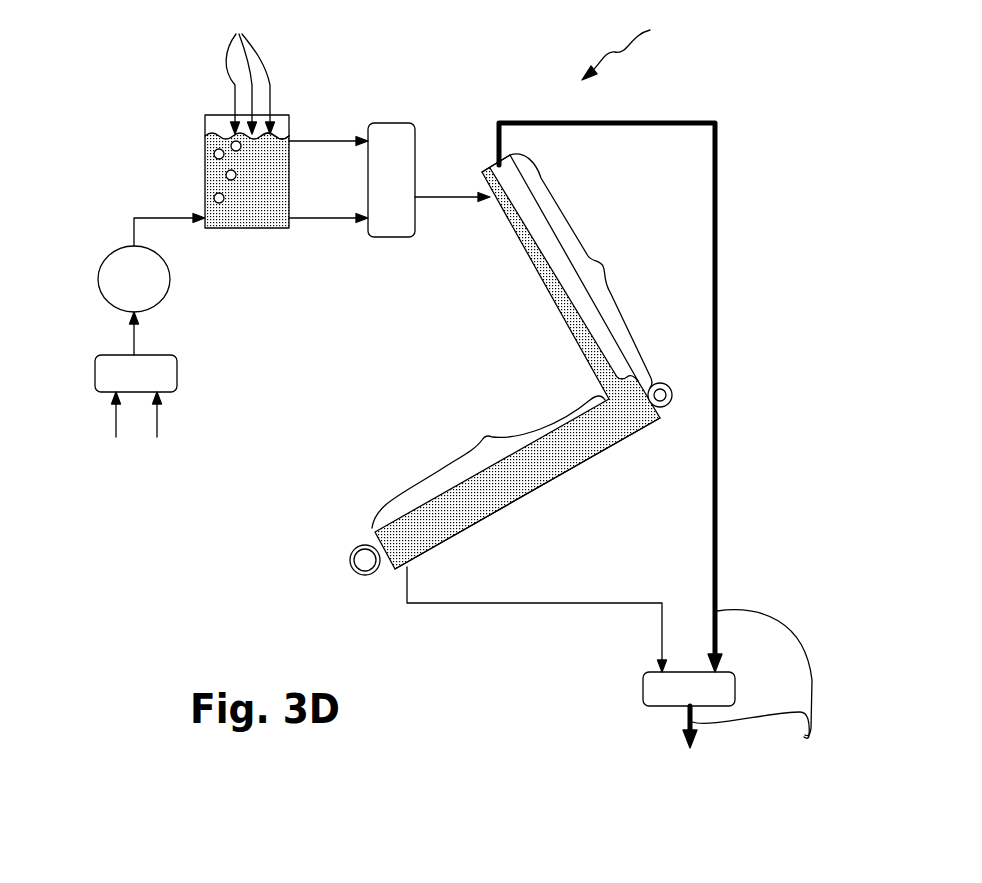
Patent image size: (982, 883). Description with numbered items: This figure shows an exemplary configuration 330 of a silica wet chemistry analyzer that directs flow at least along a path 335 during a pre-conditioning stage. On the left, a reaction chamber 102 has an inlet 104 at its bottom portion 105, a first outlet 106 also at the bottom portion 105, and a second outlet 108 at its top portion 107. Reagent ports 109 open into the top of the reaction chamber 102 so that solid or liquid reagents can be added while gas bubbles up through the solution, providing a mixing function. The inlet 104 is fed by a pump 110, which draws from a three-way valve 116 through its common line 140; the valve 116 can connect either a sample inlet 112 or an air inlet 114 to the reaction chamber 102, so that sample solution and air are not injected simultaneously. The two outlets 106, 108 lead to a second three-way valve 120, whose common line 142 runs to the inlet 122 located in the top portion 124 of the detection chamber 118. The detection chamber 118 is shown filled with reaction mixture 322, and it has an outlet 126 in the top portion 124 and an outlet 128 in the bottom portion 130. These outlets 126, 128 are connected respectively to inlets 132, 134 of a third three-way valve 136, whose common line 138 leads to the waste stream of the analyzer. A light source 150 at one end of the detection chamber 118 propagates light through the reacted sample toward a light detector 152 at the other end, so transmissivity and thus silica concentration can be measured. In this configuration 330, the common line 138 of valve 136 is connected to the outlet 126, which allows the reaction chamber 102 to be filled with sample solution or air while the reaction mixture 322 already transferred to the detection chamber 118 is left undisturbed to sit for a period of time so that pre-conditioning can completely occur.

The reaction chamber 102 is at (208, 136).
The inlet 104 is at (198, 225).
The bottom portion 105 is at (260, 208).
The first outlet 106 is at (292, 222).
The top portion 107 is at (284, 131).
The second outlet 108 is at (291, 145).
The reagent ports 109 is at (244, 70).
The pump 110 is at (103, 260).
The sample inlet 112 is at (157, 427).
The air inlet 114 is at (116, 425).
The three-way valve 116 is at (117, 383).
The detection chamber 118 is at (528, 354).
The second three-way valve 120 is at (373, 159).
The inlet 122 is at (490, 203).
The top portion 124 is at (605, 265).
The outlet 126 is at (500, 165).
The outlet 128 is at (408, 568).
The bottom portion 130 is at (484, 440).
The inlet 132 is at (718, 668).
The inlet 134 is at (658, 668).
The three-way valve 136 is at (671, 699).
The common line 138 is at (685, 710).
The common line 140 is at (135, 355).
The common line 142 is at (416, 196).
The light source 150 is at (670, 393).
The light detector 152 is at (365, 560).
The reaction mixture 322 is at (593, 435).
The configuration 330 is at (635, 48).
The path 335 is at (759, 687).